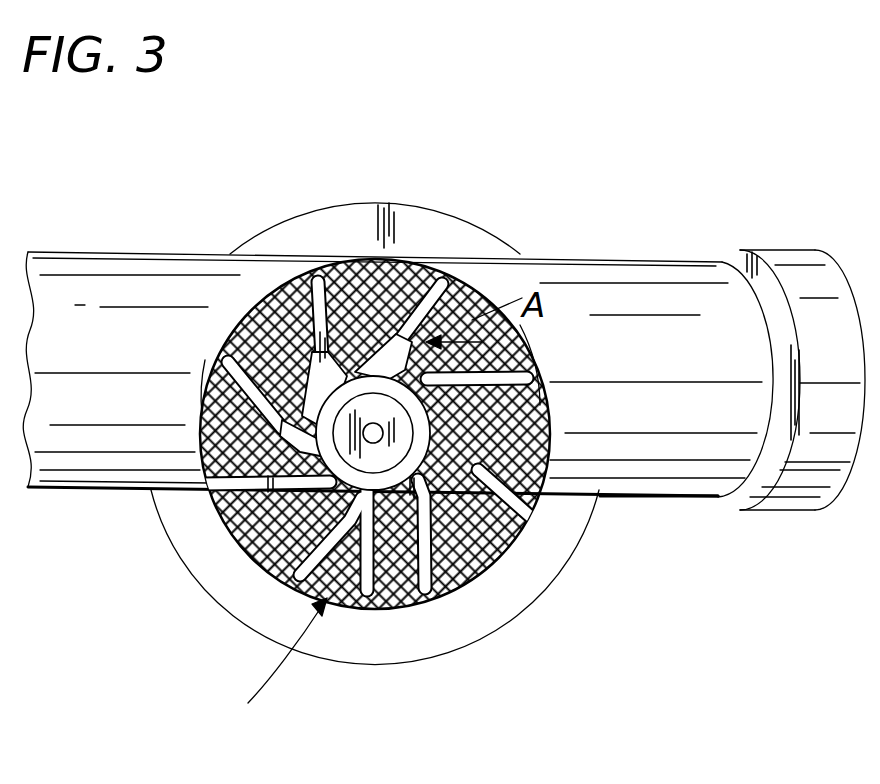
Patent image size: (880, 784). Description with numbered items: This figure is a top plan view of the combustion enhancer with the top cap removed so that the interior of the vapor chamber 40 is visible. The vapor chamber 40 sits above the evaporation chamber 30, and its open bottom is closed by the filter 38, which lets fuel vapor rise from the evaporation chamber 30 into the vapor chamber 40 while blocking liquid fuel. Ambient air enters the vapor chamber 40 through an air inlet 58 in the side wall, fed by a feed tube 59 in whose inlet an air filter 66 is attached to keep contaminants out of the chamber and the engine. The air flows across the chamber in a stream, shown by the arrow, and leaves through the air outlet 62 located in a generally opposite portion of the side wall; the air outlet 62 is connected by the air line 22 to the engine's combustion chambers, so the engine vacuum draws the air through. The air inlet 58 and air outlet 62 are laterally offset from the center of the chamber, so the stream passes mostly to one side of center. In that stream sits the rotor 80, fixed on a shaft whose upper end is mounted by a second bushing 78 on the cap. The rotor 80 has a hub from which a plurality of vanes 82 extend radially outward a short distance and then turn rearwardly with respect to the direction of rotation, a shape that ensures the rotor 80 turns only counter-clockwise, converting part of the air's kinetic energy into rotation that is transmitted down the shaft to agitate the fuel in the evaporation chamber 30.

The air line 22 is at (113, 288).
The evaporation chamber 30 is at (407, 203).
The filter 38 is at (395, 608).
The vapor chamber 40 is at (256, 666).
The air inlet 58 is at (538, 365).
The feed tube 59 is at (702, 468).
The air outlet 62 is at (207, 387).
The air filter 66 is at (802, 260).
The second bushing 78 is at (358, 608).
The rotor 80 is at (388, 383).
The vanes 82 is at (235, 355).